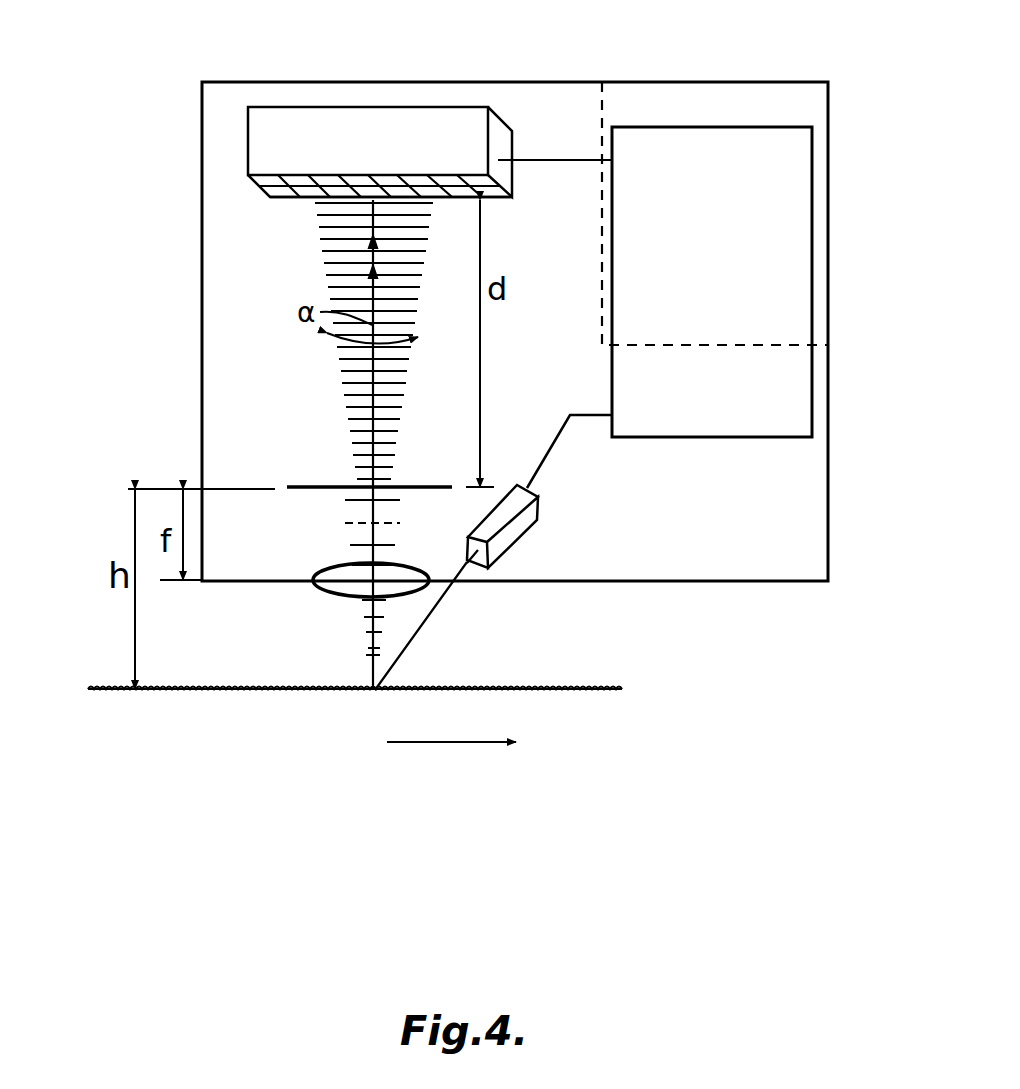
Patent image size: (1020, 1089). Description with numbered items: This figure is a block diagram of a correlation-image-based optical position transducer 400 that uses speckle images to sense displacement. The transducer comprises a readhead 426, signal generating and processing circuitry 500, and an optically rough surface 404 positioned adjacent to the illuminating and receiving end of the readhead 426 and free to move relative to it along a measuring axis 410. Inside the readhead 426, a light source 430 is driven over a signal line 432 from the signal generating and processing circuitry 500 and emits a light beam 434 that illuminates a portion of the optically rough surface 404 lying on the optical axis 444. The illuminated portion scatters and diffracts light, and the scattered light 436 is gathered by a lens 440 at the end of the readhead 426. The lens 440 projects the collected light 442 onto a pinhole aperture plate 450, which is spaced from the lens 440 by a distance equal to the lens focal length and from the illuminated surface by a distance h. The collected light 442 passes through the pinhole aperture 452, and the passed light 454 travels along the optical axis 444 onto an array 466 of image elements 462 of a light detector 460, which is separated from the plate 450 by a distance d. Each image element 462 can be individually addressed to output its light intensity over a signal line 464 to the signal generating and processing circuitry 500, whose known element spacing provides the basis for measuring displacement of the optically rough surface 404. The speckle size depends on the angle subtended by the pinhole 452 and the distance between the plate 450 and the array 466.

The correlation-image-based optical position transducer 400 is at (163, 361).
The optically rough surface 404 is at (555, 690).
The measuring axis 410 is at (455, 745).
The readhead 426 is at (397, 90).
The light source 430 is at (520, 525).
The signal line 432 is at (555, 443).
The light beam 434 is at (438, 612).
The scattered light 436 is at (365, 648).
The lens 440 is at (320, 593).
The collected light 442 is at (370, 513).
The optical axis 444 is at (402, 525).
The pinhole aperture plate 450 is at (310, 485).
The pinhole aperture 452 is at (357, 447).
The passed light 454 is at (330, 262).
The light detector 460 is at (258, 132).
The image elements 462 is at (280, 203).
The signal line 464 is at (550, 160).
The array 466 is at (248, 184).
The signal generating and processing circuitry 500 is at (800, 230).